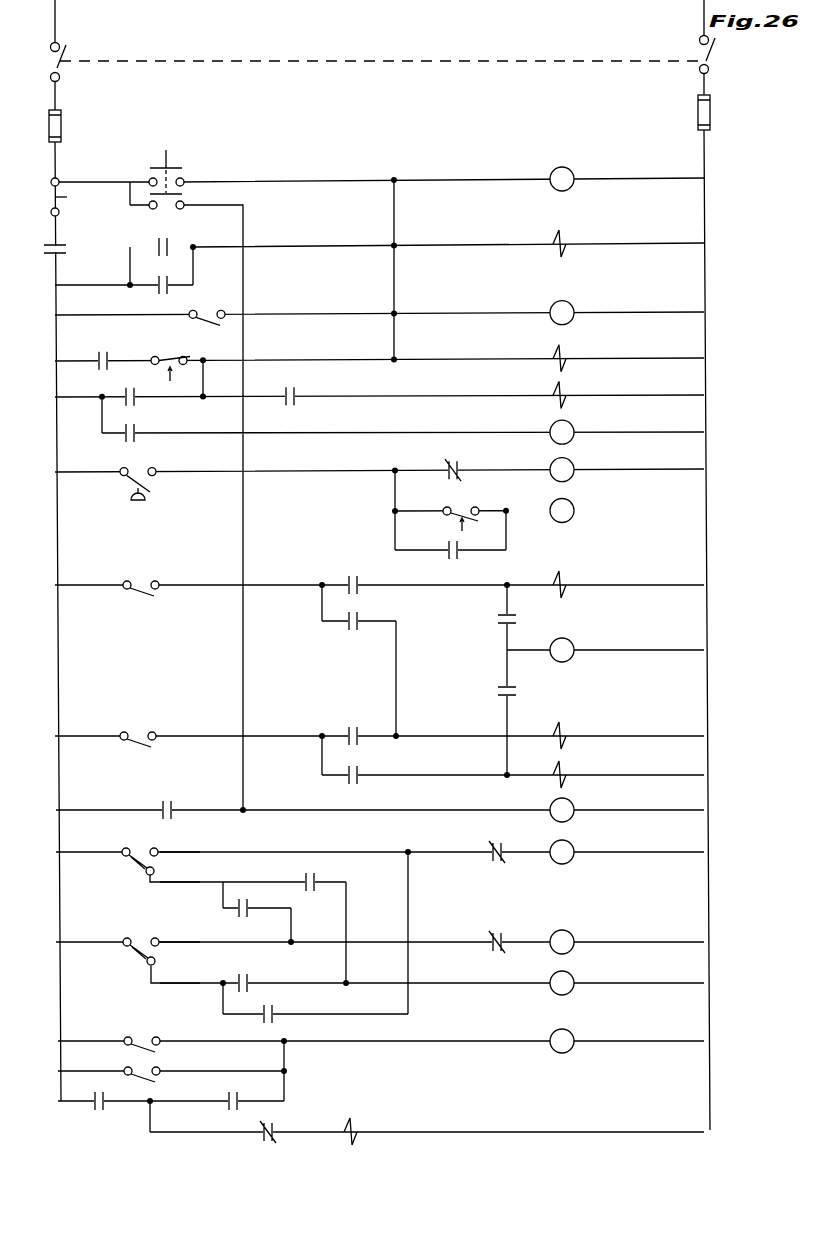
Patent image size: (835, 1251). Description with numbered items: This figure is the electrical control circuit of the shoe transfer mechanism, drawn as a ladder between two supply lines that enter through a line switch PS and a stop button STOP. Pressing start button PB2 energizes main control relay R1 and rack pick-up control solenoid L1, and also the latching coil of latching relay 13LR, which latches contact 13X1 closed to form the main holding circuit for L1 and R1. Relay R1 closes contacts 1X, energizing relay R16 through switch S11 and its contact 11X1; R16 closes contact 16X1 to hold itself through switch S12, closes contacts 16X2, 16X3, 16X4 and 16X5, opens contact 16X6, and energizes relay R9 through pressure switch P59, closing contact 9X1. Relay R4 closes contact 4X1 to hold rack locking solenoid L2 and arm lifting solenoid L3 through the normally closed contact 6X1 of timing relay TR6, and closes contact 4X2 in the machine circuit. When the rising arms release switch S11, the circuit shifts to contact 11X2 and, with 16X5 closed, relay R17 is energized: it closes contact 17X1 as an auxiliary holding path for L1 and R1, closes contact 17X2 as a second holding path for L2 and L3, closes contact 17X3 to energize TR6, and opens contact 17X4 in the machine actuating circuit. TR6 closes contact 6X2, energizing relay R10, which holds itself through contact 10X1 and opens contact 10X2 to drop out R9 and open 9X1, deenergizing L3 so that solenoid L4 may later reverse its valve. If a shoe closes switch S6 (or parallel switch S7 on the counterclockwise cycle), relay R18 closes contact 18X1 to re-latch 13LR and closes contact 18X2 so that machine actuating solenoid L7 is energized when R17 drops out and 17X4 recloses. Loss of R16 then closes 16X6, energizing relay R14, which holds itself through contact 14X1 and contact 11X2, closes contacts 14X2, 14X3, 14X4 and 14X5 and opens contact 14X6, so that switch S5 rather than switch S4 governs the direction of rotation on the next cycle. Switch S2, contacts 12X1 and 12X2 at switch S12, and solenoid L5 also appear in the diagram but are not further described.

The power switch PS is at (383, 57).
The stop pushbutton STOP is at (85, 202).
The main control relay contacts 1X is at (71, 263).
The start button PB2 is at (170, 170).
The auxiliary holding contact 17X1 is at (189, 241).
The latching relay contact 13X1 is at (135, 293).
The switch S2 is at (208, 306).
The relay holding contact 4X1 is at (88, 349).
The normally closed timing relay contact 6X1 is at (170, 354).
The second holding contact 17X2 is at (101, 393).
The timing relay energizing contact 17X3 is at (158, 429).
The relay contact 9X1 is at (308, 387).
The main control relay R1 is at (562, 167).
The rack pick-up control solenoid L1 is at (564, 232).
The relay R4 is at (562, 301).
The rack locking solenoid L2 is at (572, 353).
The transfer arm lifting solenoid L3 is at (572, 389).
The timing relay TR6 is at (580, 427).
The relay R9 is at (577, 466).
The relay R10 is at (580, 506).
The normally closed contact 10X2 is at (446, 460).
The timing relay contact 6X2 is at (445, 509).
The holding contact 10X1 is at (428, 541).
The pressure switch P59 is at (159, 474).
The switch S4 is at (153, 579).
The contact 16X2 is at (337, 573).
The contact 14X2 is at (379, 614).
The contact 16X3 is at (478, 630).
The contact 14X3 is at (478, 705).
The lamp L5 is at (575, 673).
The latching relay 13LR is at (585, 723).
The switch S5 is at (151, 730).
The contact 16X4 is at (339, 723).
The solenoid L4 is at (575, 729).
The contact 14X4 is at (379, 766).
The contact 18X1 is at (188, 798).
The switch S12 is at (115, 851).
The contact 12X2 is at (181, 841).
The contact 12X1 is at (184, 871).
The relay R14 is at (583, 844).
The contact 14X5 is at (336, 877).
The holding contact 16X1 is at (267, 902).
The contact 16X6 is at (483, 866).
The switch S11 is at (116, 942).
The switch contact 11X1 is at (183, 930).
The contact 14X6 is at (483, 931).
The relay R16 is at (583, 935).
The switch contact 11X2 is at (183, 966).
The contact 16X5 is at (269, 974).
The relay R17 is at (583, 977).
The holding contact 14X1 is at (295, 1007).
The relay R18 is at (582, 1032).
The switch S6 is at (116, 1034).
The parallel switch S7 is at (116, 1065).
The contact 4X2 is at (211, 1093).
The contact 18X2 is at (81, 1118).
The contact 17X4 is at (256, 1145).
The machine actuating solenoid L7 is at (361, 1121).